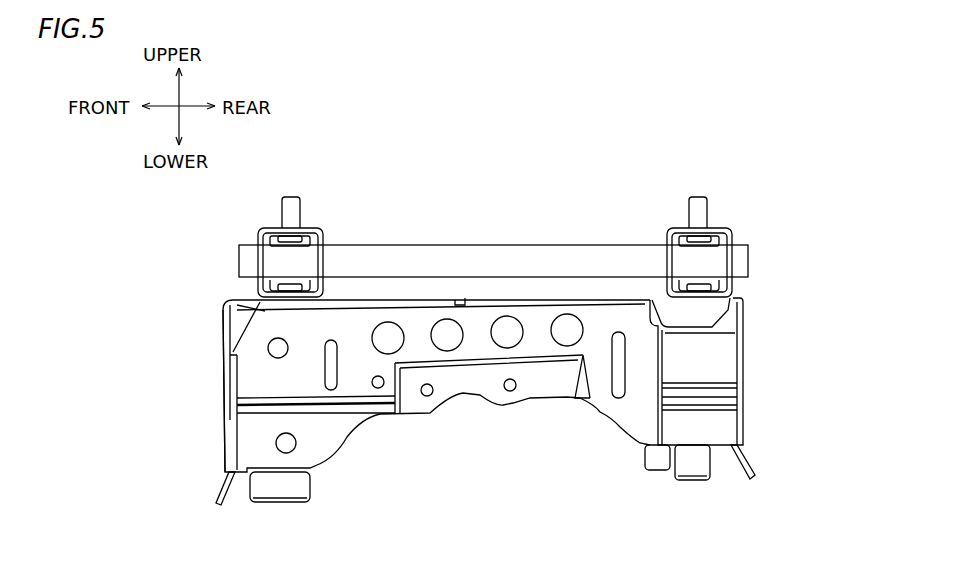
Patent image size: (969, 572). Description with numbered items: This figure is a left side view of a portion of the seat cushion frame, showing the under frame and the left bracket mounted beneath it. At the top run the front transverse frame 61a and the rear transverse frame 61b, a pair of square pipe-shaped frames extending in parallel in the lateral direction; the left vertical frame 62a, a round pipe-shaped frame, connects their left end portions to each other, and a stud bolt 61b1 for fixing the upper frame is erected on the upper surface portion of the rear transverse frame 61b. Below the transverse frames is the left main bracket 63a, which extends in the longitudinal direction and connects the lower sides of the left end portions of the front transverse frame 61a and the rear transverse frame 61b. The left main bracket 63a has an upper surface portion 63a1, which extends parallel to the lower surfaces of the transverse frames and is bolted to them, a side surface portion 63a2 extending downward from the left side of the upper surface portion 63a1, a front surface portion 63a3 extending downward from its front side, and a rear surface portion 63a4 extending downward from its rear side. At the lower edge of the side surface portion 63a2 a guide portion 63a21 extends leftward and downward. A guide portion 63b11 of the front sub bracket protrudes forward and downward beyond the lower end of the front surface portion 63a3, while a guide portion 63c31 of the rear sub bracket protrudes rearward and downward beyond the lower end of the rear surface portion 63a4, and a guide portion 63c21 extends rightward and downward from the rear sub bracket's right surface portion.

The front transverse frame 61a is at (257, 233).
The rear transverse frame 61b is at (732, 228).
The stud bolt 61b1 is at (290, 197).
The left vertical frame 62a is at (458, 244).
The left main bracket 63a is at (555, 380).
The upper surface portion 63a1 is at (537, 298).
The side surface portion 63a2 is at (455, 402).
The front surface portion 63a3 is at (222, 378).
The rear surface portion 63a4 is at (742, 352).
The guide portion 63a21 is at (282, 505).
The guide portion 63b11 is at (217, 490).
The guide portion 63c21 is at (692, 484).
The guide portion 63c31 is at (754, 463).